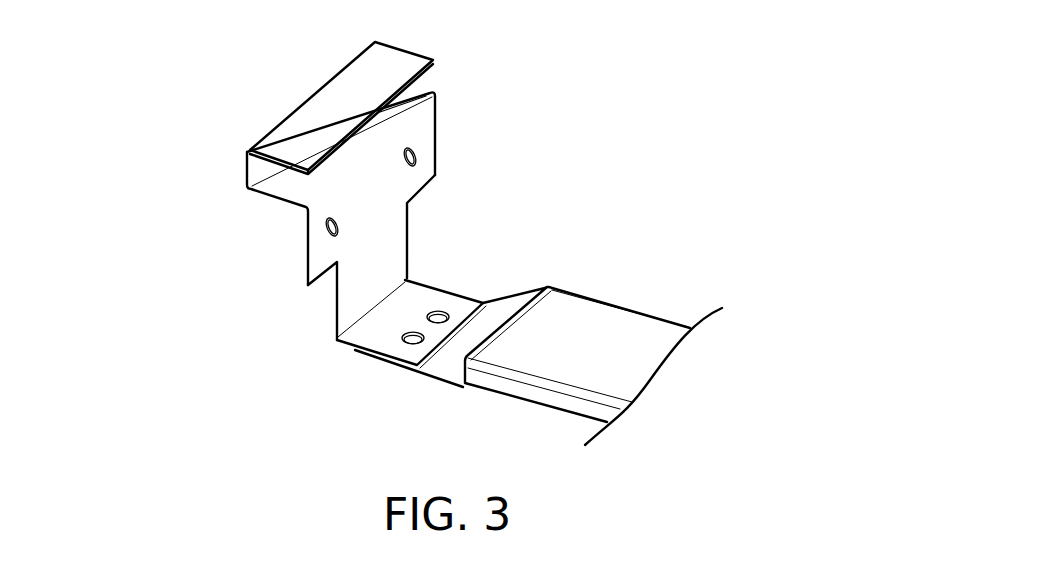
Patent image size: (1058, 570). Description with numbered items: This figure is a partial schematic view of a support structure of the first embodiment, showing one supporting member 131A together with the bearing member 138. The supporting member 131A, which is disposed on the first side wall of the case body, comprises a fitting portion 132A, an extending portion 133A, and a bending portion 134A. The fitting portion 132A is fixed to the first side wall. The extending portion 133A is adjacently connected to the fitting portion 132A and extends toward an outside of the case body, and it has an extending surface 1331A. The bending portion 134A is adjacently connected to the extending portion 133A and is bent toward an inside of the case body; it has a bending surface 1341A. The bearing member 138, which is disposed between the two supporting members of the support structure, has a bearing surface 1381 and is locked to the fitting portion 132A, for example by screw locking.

The supporting member 131A is at (123, 135).
The fitting portion 132A is at (352, 238).
The extending portion 133A is at (277, 194).
The bending portion 134A is at (270, 131).
The extending surface 1331A is at (413, 95).
The bending surface 1341A is at (399, 57).
The bearing member 138 is at (627, 311).
The bearing surface 1381 is at (585, 333).